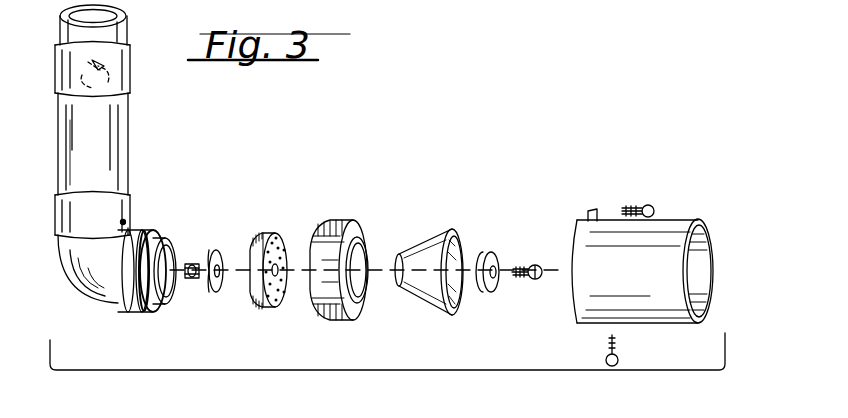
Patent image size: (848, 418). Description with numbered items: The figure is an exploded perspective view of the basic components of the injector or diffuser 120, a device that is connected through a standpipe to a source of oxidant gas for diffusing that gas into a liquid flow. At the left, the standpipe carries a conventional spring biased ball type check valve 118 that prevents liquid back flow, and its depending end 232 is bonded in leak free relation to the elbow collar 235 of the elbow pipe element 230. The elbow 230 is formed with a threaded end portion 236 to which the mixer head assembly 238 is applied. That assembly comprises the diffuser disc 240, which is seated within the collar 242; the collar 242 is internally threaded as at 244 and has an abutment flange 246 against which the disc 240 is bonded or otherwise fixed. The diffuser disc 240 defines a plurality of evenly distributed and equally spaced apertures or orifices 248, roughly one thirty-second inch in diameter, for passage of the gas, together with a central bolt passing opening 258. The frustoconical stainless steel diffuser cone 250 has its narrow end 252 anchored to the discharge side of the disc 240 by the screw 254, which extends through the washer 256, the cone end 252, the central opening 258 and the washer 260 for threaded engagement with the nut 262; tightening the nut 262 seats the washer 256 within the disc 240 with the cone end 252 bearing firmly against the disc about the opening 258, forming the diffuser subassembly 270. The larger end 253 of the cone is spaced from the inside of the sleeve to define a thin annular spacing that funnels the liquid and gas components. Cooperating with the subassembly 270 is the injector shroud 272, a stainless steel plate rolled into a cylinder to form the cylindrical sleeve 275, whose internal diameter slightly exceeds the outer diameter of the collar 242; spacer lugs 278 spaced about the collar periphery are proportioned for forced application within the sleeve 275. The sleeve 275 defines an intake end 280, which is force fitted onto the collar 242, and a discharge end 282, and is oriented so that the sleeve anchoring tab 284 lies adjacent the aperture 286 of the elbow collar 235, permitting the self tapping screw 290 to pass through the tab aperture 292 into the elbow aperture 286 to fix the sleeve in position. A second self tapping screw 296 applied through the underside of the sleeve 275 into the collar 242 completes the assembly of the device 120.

The check valve 118 is at (112, 72).
The injector or diffuser 120 is at (252, 182).
The elbow pipe element 230 is at (78, 280).
The depending end 232 is at (63, 180).
The elbow collar 235 is at (83, 222).
The threaded end portion 236 is at (143, 312).
The mixer head assembly 238 is at (617, 190).
The diffuser disc 240 is at (263, 232).
The collar 242 is at (356, 232).
The internal threads 244 is at (358, 272).
The abutment flange 246 is at (358, 306).
The apertures or orifices 248 is at (278, 302).
The diffuser cone 250 is at (457, 300).
The narrow end 252 is at (406, 250).
The larger end 253 is at (446, 310).
The screw 254 is at (522, 264).
The washer 256 is at (496, 290).
The central bolt passing opening 258 is at (279, 264).
The washer 260 is at (215, 250).
The nut 262 is at (190, 283).
The diffuser subassembly 270 is at (303, 364).
The injector shroud 272 is at (704, 222).
The cylindrical sleeve 275 is at (700, 258).
The spacer lugs 278 is at (333, 228).
The intake end 280 is at (585, 320).
The discharge end 282 is at (706, 305).
The sleeve anchoring tab 284 is at (533, 265).
The elbow aperture 286 is at (126, 220).
The self tapping screw 290 is at (638, 208).
The tab aperture 292 is at (594, 220).
The self tapping screw 296 is at (612, 365).